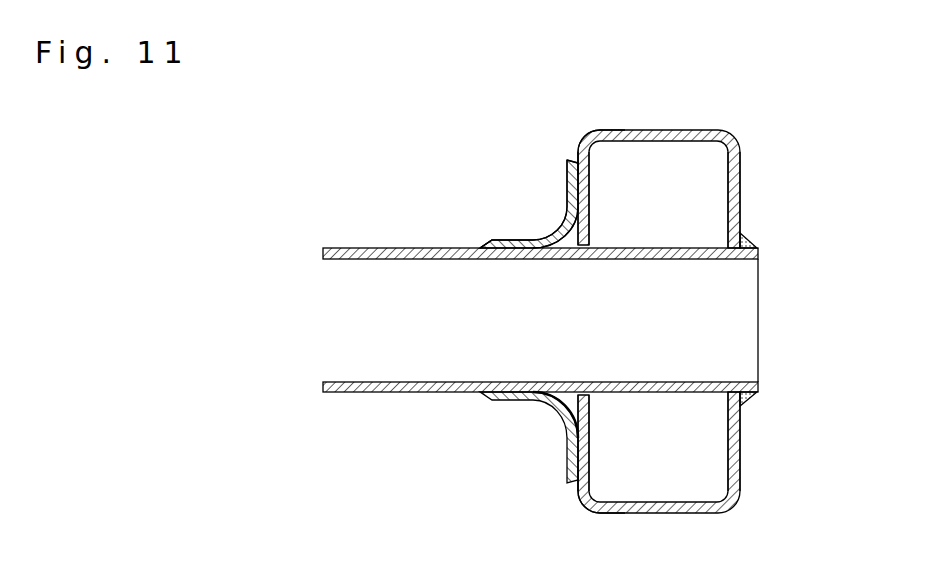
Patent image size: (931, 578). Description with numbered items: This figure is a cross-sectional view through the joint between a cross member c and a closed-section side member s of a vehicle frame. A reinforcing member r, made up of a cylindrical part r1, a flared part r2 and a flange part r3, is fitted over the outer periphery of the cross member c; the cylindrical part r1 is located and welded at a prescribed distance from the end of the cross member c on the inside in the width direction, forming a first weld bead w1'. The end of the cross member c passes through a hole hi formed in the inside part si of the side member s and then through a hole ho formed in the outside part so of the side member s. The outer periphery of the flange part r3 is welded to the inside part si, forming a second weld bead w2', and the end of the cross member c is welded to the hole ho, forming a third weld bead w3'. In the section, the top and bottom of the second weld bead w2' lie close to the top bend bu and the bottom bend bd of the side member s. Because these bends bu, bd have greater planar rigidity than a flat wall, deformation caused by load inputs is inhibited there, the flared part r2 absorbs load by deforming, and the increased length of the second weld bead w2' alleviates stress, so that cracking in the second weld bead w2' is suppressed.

The cross member c is at (375, 247).
The side member s is at (664, 122).
The reinforcing member r is at (528, 200).
The cylindrical part r1 is at (490, 242).
The flared part r2 is at (545, 231).
The flange part r3 is at (567, 181).
The first weld bead w1' is at (451, 229).
The second weld bead w2' is at (558, 129).
The third weld bead w3' is at (779, 228).
The top bend bu is at (583, 129).
The bottom bend bd is at (581, 505).
The hole hi is at (590, 224).
The hole ho is at (727, 237).
The inside part si is at (591, 459).
The outside part so is at (741, 459).